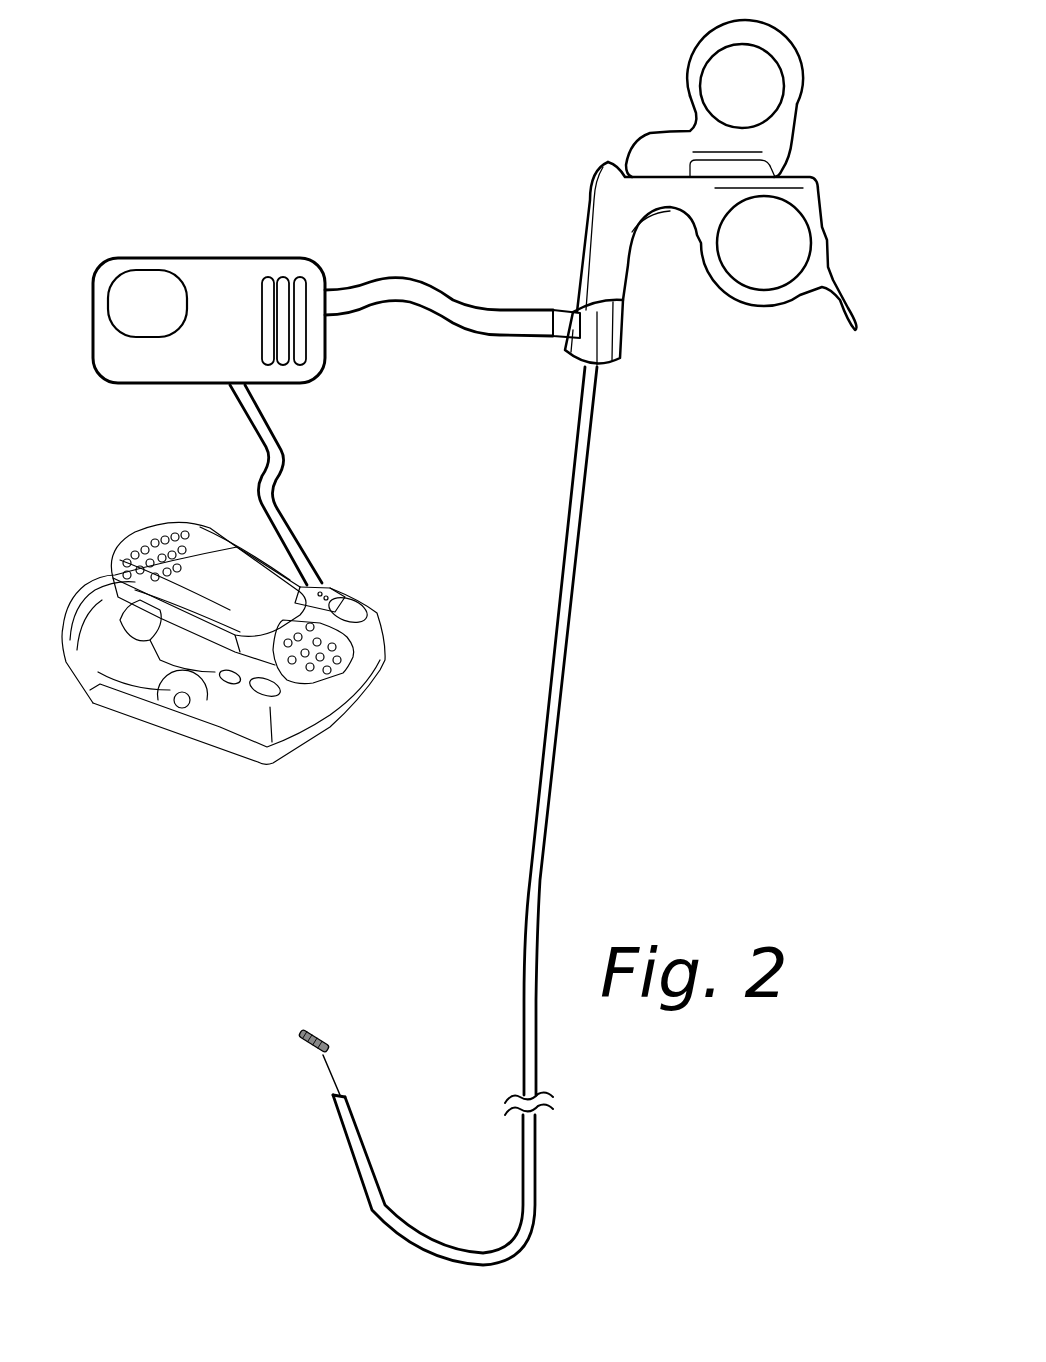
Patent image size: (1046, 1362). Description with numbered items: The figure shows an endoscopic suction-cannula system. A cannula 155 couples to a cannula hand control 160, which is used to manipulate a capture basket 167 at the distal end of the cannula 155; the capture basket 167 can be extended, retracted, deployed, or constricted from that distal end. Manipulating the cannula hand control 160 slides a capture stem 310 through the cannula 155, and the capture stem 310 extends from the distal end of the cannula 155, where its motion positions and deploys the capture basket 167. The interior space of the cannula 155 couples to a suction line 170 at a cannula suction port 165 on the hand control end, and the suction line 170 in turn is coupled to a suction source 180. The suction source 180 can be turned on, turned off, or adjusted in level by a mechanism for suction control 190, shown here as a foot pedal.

The cannula 155 is at (370, 1140).
The cannula hand control 160 is at (688, 93).
The cannula suction port 165 is at (563, 312).
The capture basket 167 is at (325, 1040).
The suction line 170 is at (427, 312).
The suction source 180 is at (228, 359).
The mechanism for suction control 190 is at (150, 728).
The capture stem 310 is at (335, 1072).